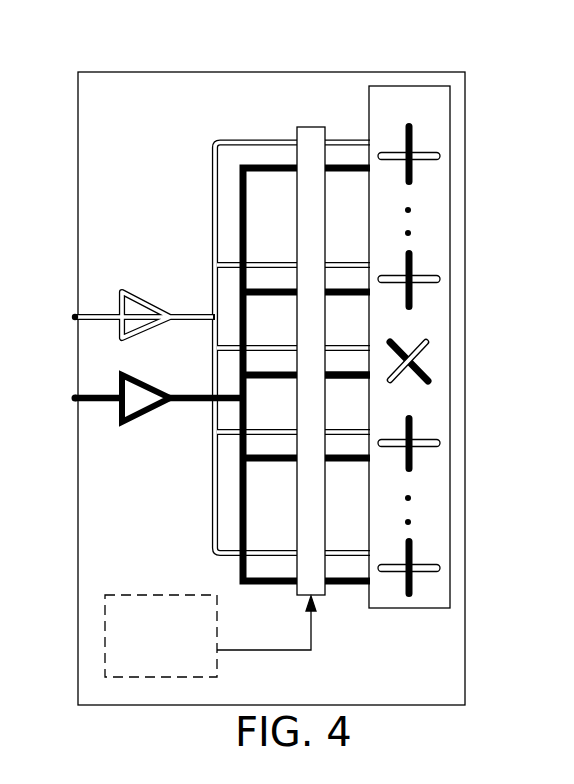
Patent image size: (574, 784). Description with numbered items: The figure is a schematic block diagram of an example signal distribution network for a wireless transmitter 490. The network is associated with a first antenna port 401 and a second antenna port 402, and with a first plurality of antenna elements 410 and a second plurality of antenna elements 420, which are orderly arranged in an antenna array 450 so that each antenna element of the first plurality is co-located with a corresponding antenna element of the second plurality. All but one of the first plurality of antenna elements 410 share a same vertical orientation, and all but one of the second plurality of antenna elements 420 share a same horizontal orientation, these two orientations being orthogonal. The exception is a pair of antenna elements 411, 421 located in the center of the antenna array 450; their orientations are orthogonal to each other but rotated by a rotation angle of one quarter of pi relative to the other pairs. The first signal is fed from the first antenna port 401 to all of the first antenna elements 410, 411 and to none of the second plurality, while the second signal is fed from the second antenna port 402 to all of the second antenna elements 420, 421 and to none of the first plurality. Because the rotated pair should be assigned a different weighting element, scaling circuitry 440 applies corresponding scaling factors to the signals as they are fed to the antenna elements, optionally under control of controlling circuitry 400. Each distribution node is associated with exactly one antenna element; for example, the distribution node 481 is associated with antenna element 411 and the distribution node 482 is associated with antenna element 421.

The controlling circuitry 400 is at (210, 636).
The first antenna port 401 is at (124, 315).
The second antenna port 402 is at (138, 398).
The first plurality of antenna elements 410 is at (440, 278).
The first antenna element of the center pair 411 is at (430, 338).
The second plurality of antenna elements 420 is at (411, 250).
The second antenna element of the center pair 421 is at (425, 370).
The scaling circuitry 440 is at (310, 127).
The antenna array 450 is at (409, 347).
The distribution node 481 is at (366, 347).
The distribution node 482 is at (365, 378).
The wireless transmitter 490 is at (271, 388).